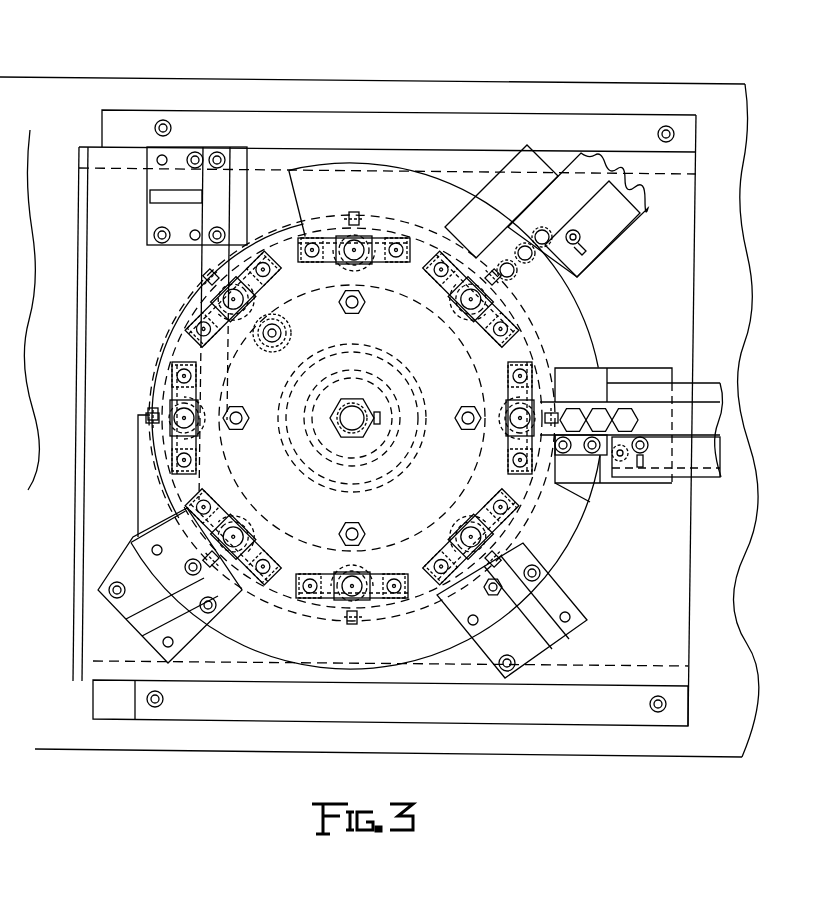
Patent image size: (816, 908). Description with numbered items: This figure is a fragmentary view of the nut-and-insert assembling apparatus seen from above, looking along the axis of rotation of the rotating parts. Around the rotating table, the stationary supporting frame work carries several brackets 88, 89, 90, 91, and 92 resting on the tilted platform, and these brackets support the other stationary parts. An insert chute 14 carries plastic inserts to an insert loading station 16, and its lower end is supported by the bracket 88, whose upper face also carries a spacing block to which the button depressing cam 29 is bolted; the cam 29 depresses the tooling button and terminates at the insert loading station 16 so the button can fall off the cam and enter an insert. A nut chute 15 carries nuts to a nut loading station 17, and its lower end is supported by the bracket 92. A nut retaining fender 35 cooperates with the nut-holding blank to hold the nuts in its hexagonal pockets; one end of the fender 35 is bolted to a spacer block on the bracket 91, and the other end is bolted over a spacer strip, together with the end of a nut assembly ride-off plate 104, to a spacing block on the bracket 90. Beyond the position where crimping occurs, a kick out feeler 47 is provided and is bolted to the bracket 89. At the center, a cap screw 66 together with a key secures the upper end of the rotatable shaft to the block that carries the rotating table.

The insert chute 14 is at (620, 220).
The nut chute 15 is at (683, 458).
The insert loading station 16 is at (457, 336).
The nut loading station 17 is at (496, 439).
The cam 29 is at (300, 199).
The nut retaining fender 35 is at (573, 530).
The kick out feeler 47 is at (212, 258).
The cap screw 66 is at (336, 398).
The bracket 88 is at (530, 155).
The bracket 89 is at (150, 218).
The bracket 90 is at (135, 575).
The bracket 91 is at (556, 600).
The bracket 92 is at (591, 380).
The nut assembly ride-off plate 104 is at (148, 482).